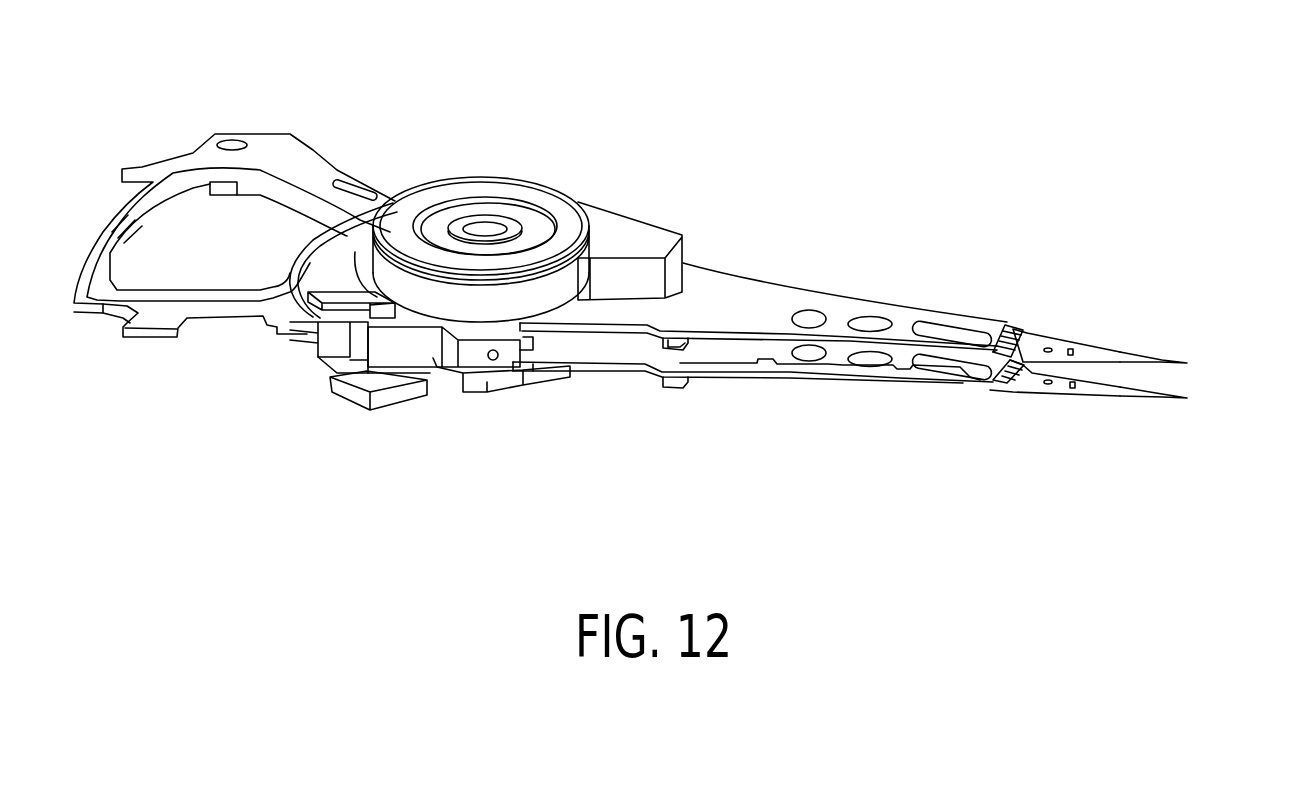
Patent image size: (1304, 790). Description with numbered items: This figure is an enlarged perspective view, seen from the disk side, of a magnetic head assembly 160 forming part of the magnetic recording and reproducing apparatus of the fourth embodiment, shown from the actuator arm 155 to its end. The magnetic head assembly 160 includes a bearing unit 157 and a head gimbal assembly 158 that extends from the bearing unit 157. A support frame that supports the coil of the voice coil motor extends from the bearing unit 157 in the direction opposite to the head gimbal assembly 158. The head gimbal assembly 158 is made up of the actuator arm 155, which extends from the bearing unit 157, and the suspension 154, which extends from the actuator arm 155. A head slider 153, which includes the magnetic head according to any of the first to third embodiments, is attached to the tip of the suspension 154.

The head slider 153 is at (1138, 351).
The suspension 154 is at (1095, 354).
The actuator arm 155 is at (905, 325).
The bearing unit 157 is at (500, 146).
The head gimbal assembly 158 is at (837, 273).
The magnetic head assembly 160 is at (781, 185).